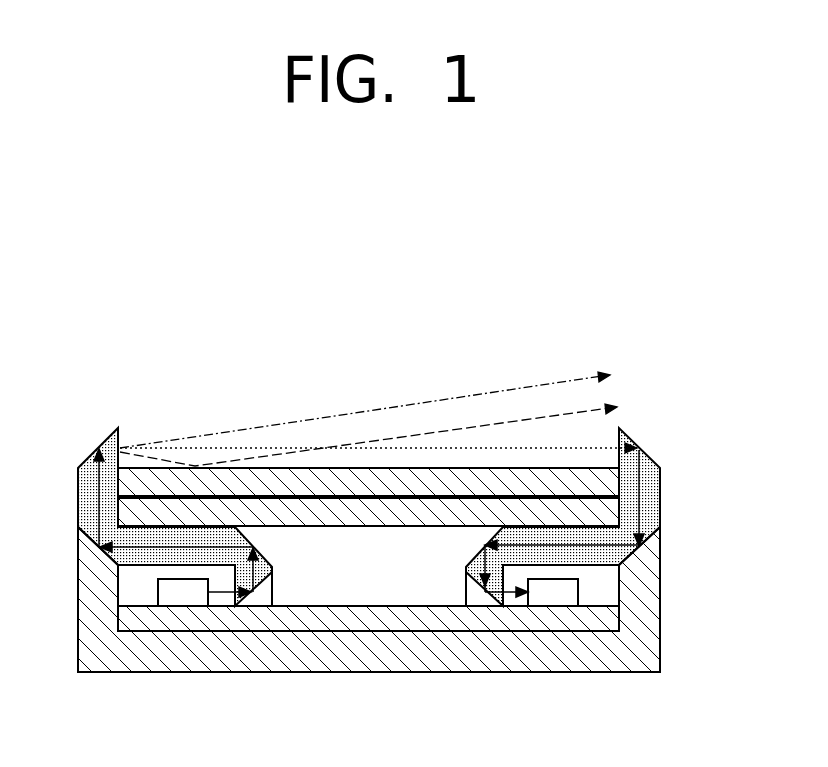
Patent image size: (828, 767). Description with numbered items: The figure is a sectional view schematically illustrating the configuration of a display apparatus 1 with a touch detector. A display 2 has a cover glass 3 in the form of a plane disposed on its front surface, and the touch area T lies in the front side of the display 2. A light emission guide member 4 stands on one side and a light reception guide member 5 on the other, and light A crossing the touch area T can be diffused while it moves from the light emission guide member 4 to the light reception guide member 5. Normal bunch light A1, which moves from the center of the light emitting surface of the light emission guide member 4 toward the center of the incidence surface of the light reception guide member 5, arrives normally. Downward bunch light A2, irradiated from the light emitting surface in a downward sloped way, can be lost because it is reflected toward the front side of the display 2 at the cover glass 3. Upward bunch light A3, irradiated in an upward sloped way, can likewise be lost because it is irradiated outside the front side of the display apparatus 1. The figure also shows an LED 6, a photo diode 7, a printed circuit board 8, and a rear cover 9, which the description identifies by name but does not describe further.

The display apparatus 1 is at (351, 300).
The display 2 is at (613, 513).
The cover glass 3 is at (612, 473).
The light emission guide member 4 is at (82, 478).
The light reception guide member 5 is at (645, 495).
The LED 6 is at (172, 590).
The photo diode 7 is at (563, 590).
The printed circuit board 8 is at (322, 620).
The rear cover 9 is at (397, 638).
The light A is at (97, 508).
The normal bunch light A1 is at (210, 448).
The downward bunch light A2 is at (250, 460).
The upward bunch light A3 is at (170, 435).
The touch area T is at (380, 460).